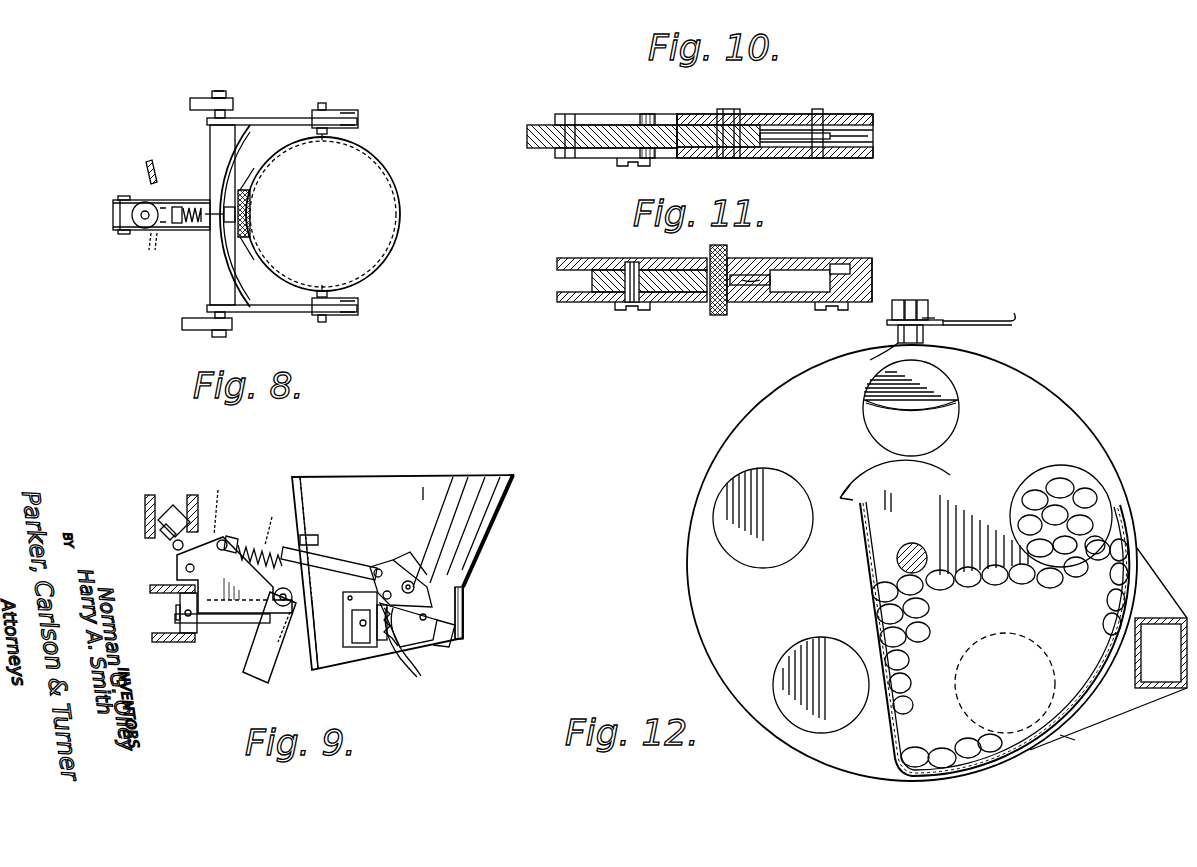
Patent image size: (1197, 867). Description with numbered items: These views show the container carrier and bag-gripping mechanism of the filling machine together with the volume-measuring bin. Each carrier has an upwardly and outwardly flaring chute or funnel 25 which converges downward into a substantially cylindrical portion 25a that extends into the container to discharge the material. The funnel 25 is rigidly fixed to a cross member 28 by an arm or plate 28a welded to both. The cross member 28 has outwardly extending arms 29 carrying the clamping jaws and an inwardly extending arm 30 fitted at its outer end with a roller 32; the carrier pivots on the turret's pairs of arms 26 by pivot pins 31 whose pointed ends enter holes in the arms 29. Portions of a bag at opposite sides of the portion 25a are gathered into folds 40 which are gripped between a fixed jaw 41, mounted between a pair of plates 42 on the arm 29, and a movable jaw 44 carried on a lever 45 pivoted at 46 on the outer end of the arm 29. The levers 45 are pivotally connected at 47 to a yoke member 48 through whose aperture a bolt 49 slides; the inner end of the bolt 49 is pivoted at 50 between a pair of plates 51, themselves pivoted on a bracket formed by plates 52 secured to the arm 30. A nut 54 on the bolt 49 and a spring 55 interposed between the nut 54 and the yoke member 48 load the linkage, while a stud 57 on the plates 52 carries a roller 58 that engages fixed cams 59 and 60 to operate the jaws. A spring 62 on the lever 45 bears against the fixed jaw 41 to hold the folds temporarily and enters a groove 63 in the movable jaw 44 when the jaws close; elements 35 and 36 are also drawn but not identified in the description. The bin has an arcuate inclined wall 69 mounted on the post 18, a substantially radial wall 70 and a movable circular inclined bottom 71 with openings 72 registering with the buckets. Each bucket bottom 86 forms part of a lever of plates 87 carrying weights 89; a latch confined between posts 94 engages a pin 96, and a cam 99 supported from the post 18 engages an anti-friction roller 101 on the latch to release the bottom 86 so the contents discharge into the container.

In FIG. 12, the post or column 18 is at (1180, 690).
In FIG. 9, the chute or funnel 25 is at (512, 480).
In FIG. 8, the cylindrical portion of funnel 25a is at (400, 210).
In FIG. 9, the cylindrical portion of funnel 25a is at (465, 615).
In FIG. 8, the arms 26 is at (195, 103).
In FIG. 9, the arms 26 is at (250, 678).
In FIG. 8, the cross member 28 is at (215, 135).
In FIG. 8, the arm or plate 28a is at (252, 195).
In FIG. 9, the arm or plate 28a is at (305, 535).
In FIG. 8, the outwardly extending arms 29 is at (240, 120).
In FIG. 9, the outwardly extending arms 29 is at (315, 655).
In FIG. 10, the outwardly extending arms 29 is at (540, 125).
In FIG. 8, the inwardly extending arm 30 is at (160, 245).
In FIG. 9, the inwardly extending arm 30 is at (232, 623).
In FIG. 8, the pivot pins 31 is at (218, 91).
In FIG. 9, the pivot pins 31 is at (290, 622).
In FIG. 9, the roller 32 is at (178, 615).
In FIG. 9, the lower bracket 35 is at (160, 642).
In FIG. 9, the upper bracket 36 is at (150, 588).
In FIG. 8, the folds 40 is at (322, 103).
In FIG. 11, the folds 40 is at (715, 315).
In FIG. 9, the fixed jaw 41 is at (386, 640).
In FIG. 11, the fixed jaw 41 is at (662, 300).
In FIG. 9, the plates 42 is at (350, 647).
In FIG. 10, the plates 42 is at (605, 115).
In FIG. 11, the plates 42 is at (580, 258).
In FIG. 9, the movable jaw 44 is at (428, 648).
In FIG. 11, the movable jaw 44 is at (805, 258).
In FIG. 9, the lever 45 is at (449, 640).
In FIG. 10, the lever 45 is at (875, 135).
In FIG. 11, the lever 45 is at (875, 265).
In FIG. 9, the pivot 46 is at (400, 558).
In FIG. 10, the pivot 46 is at (730, 110).
In FIG. 9, the pivotal connection 47 is at (380, 568).
In FIG. 8, the yoke member 48 is at (285, 125).
In FIG. 9, the yoke member 48 is at (345, 568).
In FIG. 8, the bolt 49 is at (237, 215).
In FIG. 9, the bolt 49 is at (267, 520).
In FIG. 9, the pivot 50 is at (213, 509).
In FIG. 8, the pair of plates 51 is at (118, 208).
In FIG. 9, the pair of plates 51 is at (172, 555).
In FIG. 8, the bracket plates 52 is at (118, 203).
In FIG. 9, the bracket plates 52 is at (230, 578).
In FIG. 8, the nut 54 is at (175, 207).
In FIG. 9, the nut 54 is at (230, 536).
In FIG. 8, the spring 55 is at (190, 208).
In FIG. 9, the spring 55 is at (258, 545).
In FIG. 9, the stud or bearing pin 57 is at (165, 528).
In FIG. 8, the roller 58 is at (112, 215).
In FIG. 9, the roller 58 is at (170, 520).
In FIG. 8, the fixed cam 59 is at (146, 166).
In FIG. 9, the fixed cam 59 is at (193, 495).
In FIG. 9, the fixed cam 60 is at (145, 505).
In FIG. 9, the spring 62 is at (412, 665).
In FIG. 10, the spring 62 is at (775, 158).
In FIG. 11, the spring 62 is at (737, 300).
In FIG. 11, the groove or recess 63 is at (765, 290).
In FIG. 12, the arcuate inclined wall 69 is at (1075, 730).
In FIG. 12, the radial wall 70 is at (862, 575).
In FIG. 12, the movable circular inclined bottom 71 is at (700, 622).
In FIG. 12, the openings 72 is at (772, 468).
In FIG. 12, the bucket bottoms 86 is at (895, 415).
In FIG. 12, the plates 87 is at (900, 300).
In FIG. 12, the weights 89 is at (922, 298).
In FIG. 12, the posts 94 is at (895, 325).
In FIG. 12, the pin 96 is at (895, 350).
In FIG. 12, the cam 99 is at (1005, 318).
In FIG. 12, the anti-friction roller 101 is at (960, 328).